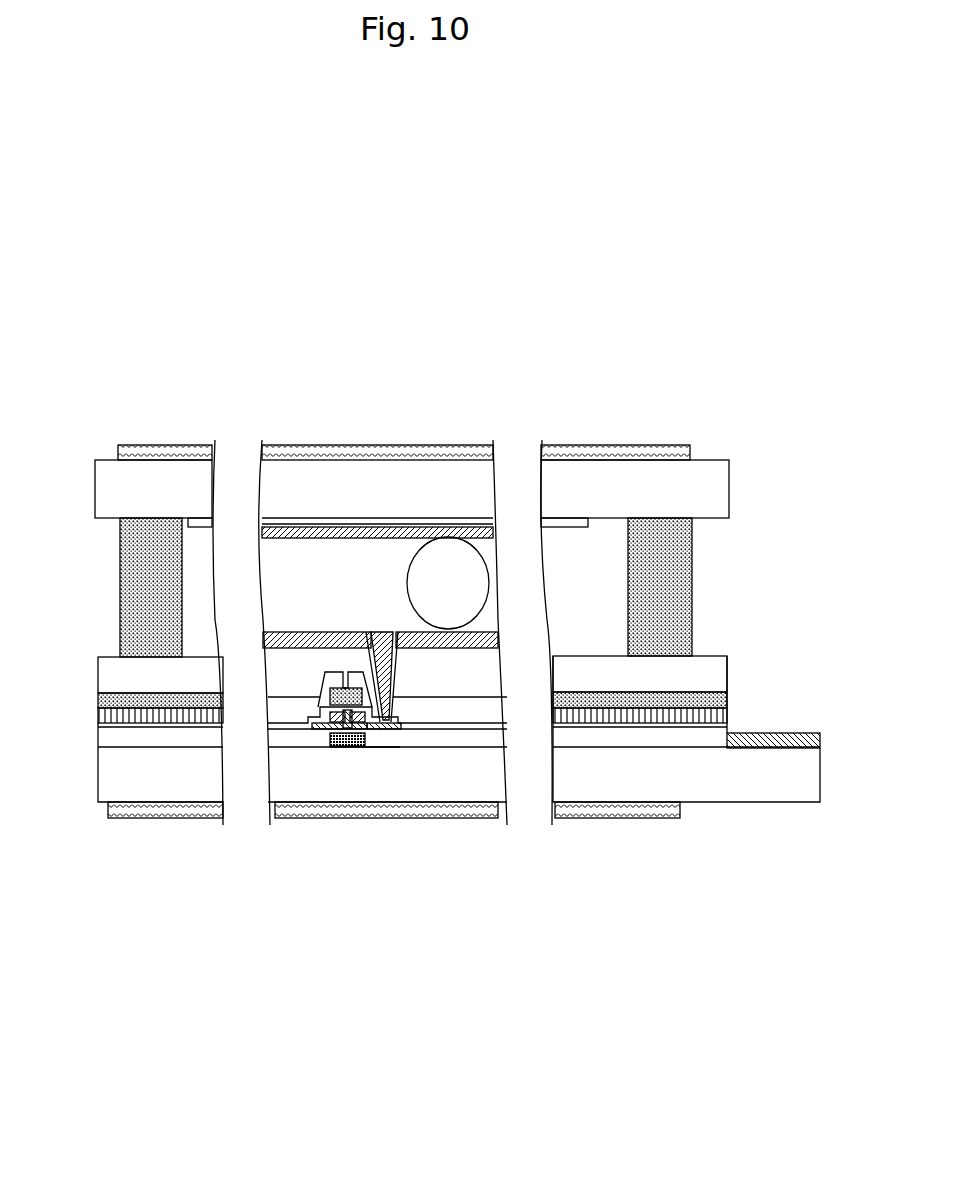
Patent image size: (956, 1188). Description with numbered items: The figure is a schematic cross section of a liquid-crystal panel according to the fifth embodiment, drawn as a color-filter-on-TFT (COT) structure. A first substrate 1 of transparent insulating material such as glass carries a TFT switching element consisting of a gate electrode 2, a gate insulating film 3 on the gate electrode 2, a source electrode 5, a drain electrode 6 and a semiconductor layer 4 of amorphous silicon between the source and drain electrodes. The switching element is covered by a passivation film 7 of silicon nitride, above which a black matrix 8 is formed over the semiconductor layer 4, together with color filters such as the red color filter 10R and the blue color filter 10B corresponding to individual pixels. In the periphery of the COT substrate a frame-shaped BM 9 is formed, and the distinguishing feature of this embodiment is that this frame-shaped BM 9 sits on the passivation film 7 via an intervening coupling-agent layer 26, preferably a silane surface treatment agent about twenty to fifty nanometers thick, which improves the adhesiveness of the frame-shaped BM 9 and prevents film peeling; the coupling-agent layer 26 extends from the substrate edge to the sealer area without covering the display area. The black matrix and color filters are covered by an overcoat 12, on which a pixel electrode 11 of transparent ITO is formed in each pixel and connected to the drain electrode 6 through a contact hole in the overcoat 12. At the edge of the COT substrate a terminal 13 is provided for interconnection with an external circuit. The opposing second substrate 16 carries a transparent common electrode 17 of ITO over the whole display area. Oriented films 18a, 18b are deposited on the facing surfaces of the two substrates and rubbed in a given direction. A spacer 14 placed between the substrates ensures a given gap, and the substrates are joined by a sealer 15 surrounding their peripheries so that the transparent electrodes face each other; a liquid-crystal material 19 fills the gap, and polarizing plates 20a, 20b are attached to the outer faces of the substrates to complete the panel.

The first substrate 1 is at (605, 780).
The gate electrode 2 is at (369, 752).
The gate insulating film 3 is at (657, 737).
The semiconductor layer 4 is at (349, 731).
The source electrode 5 is at (314, 739).
The drain electrode 6 is at (392, 735).
The passivation film 7 is at (675, 729).
The black matrix 8 is at (325, 699).
The frame-shaped BM 9 is at (130, 700).
The blue color filter 10B is at (285, 706).
The red color filter 10R is at (408, 704).
The pixel electrode 11 is at (481, 638).
The overcoat 12 is at (305, 666).
The terminal 13 is at (782, 751).
The spacer 14 is at (437, 572).
The sealer 15 is at (668, 548).
The second substrate 16 is at (672, 480).
The transparent common electrode 17 is at (571, 523).
The oriented film 18a is at (360, 633).
The oriented film 18b is at (302, 526).
The liquid-crystal material 19 is at (337, 570).
The polarizing plate 20a is at (150, 815).
The polarizing plate 20b is at (205, 447).
The coupling-agent layer 26 is at (627, 722).